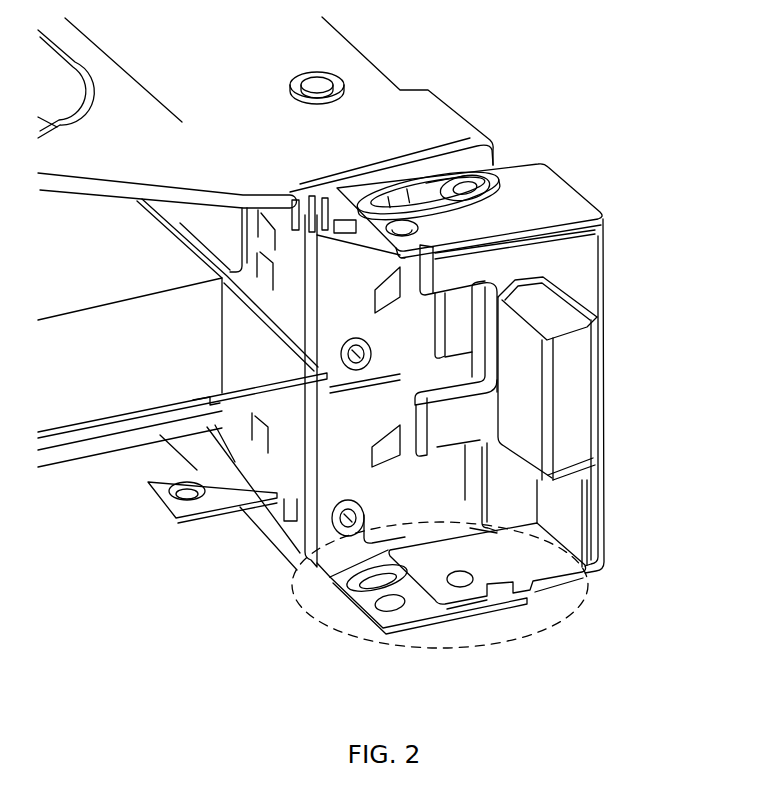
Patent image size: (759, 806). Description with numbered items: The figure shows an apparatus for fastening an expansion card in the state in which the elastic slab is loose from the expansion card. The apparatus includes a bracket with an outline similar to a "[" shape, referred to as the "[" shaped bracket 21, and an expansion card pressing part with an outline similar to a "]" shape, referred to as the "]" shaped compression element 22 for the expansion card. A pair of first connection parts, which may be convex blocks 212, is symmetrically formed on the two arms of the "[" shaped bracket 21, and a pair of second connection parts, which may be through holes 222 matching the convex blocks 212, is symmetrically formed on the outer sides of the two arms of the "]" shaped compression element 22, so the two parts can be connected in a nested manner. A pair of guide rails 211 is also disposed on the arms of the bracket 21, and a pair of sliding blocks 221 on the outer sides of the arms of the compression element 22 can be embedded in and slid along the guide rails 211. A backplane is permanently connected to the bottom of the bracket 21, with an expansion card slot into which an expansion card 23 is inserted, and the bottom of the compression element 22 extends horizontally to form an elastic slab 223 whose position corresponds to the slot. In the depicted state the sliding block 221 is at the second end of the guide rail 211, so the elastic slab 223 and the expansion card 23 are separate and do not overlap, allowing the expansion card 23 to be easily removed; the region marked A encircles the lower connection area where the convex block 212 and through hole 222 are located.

The "[" shaped bracket 21 is at (282, 351).
The guide rail 211 is at (417, 176).
The convex block 212 is at (377, 612).
The "]" shaped compression element for the expansion card 22 is at (527, 366).
The sliding block 221 is at (458, 186).
The through hole 222 is at (403, 227).
The elastic slab 223 is at (438, 273).
The expansion card 23 is at (243, 385).
The region A is at (562, 622).